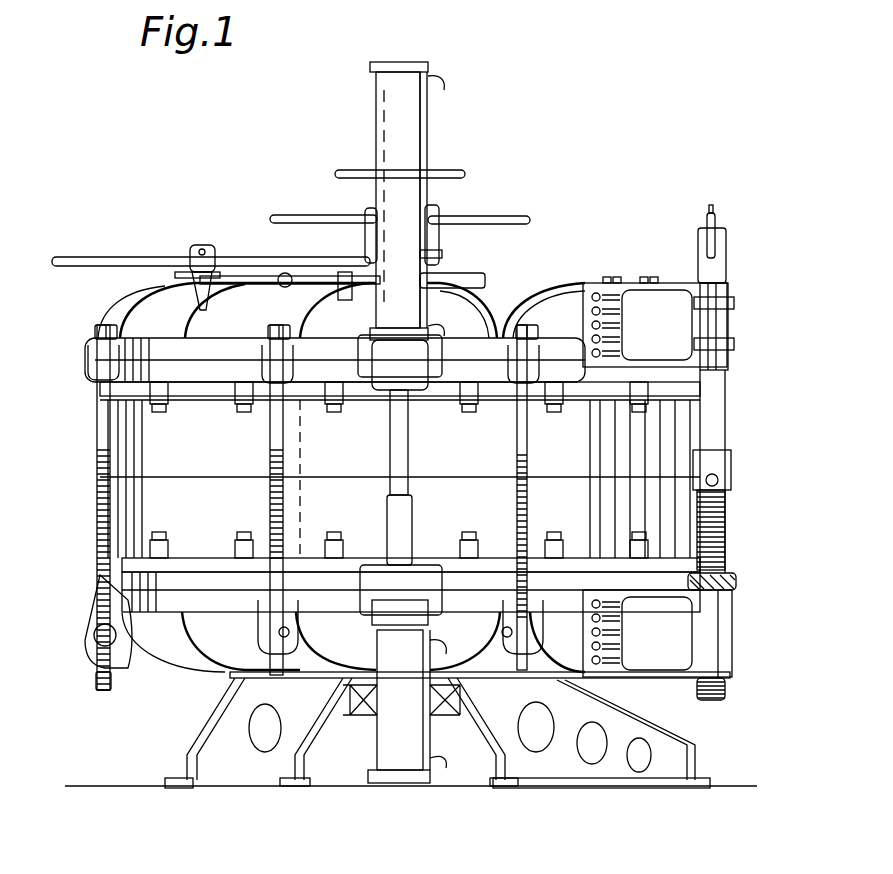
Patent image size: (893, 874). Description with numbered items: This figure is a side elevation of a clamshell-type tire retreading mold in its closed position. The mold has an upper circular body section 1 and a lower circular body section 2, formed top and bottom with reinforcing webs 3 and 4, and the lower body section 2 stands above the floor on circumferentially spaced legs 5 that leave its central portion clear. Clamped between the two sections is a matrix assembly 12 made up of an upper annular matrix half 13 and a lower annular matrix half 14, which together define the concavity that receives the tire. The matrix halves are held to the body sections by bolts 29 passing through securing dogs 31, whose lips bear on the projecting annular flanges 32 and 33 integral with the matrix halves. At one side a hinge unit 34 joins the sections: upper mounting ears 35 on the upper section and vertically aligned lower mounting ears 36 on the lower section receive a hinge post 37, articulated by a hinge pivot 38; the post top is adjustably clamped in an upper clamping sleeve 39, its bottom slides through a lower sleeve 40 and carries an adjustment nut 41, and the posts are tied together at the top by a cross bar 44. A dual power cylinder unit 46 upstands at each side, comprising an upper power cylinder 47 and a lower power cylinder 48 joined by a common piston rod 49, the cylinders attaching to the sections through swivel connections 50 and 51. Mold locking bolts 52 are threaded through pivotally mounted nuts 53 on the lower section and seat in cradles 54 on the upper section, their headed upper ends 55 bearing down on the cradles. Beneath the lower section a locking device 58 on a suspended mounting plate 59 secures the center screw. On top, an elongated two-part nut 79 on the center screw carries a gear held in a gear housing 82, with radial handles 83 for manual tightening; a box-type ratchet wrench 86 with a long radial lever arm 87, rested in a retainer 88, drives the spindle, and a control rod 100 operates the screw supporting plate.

The upper circular body section 1 is at (148, 372).
The lower circular body section 2 is at (135, 578).
The reinforcing webs 3 is at (165, 320).
The reinforcing webs 4 is at (207, 640).
The legs 5 is at (510, 763).
The matrix assembly 12 is at (118, 440).
The upper annular matrix half 13 is at (150, 420).
The lower annular matrix half 14 is at (138, 505).
The bolts 29 is at (328, 406).
The securing dogs 31 is at (240, 404).
The annular flange 32 is at (372, 392).
The annular flange 33 is at (303, 556).
The hinge unit 34 is at (730, 264).
The upper mounting ears 35 is at (657, 283).
The lower mounting ears 36 is at (722, 690).
The hinge post 37 is at (732, 497).
The hinge pivot 38 is at (718, 478).
The upper clamping sleeve 39 is at (735, 323).
The lower sleeve 40 is at (718, 640).
The adjustment nut 41 is at (738, 580).
The cross bar 44 is at (717, 232).
The dual power cylinder unit 46 is at (376, 112).
The upper power cylinder 47 is at (410, 160).
The lower power cylinder 48 is at (389, 715).
The common piston rod 49 is at (396, 448).
The swivel connection 50 is at (434, 350).
The swivel connection 51 is at (366, 612).
The mold locking bolts 52 is at (105, 540).
The pivotally mounted nuts 53 is at (274, 628).
The cradles 54 is at (100, 360).
The headed upper ends 55 is at (95, 330).
The locking device 58 is at (433, 709).
The mounting plate 59 is at (262, 726).
The elongated nut 79 is at (442, 222).
The gear housing 82 is at (463, 287).
The radial handles 83 is at (495, 218).
The box-type ratchet wrench 86 is at (338, 236).
The radial lever arm 87 is at (76, 257).
The retainer 88 is at (210, 292).
The control rod 100 is at (350, 292).